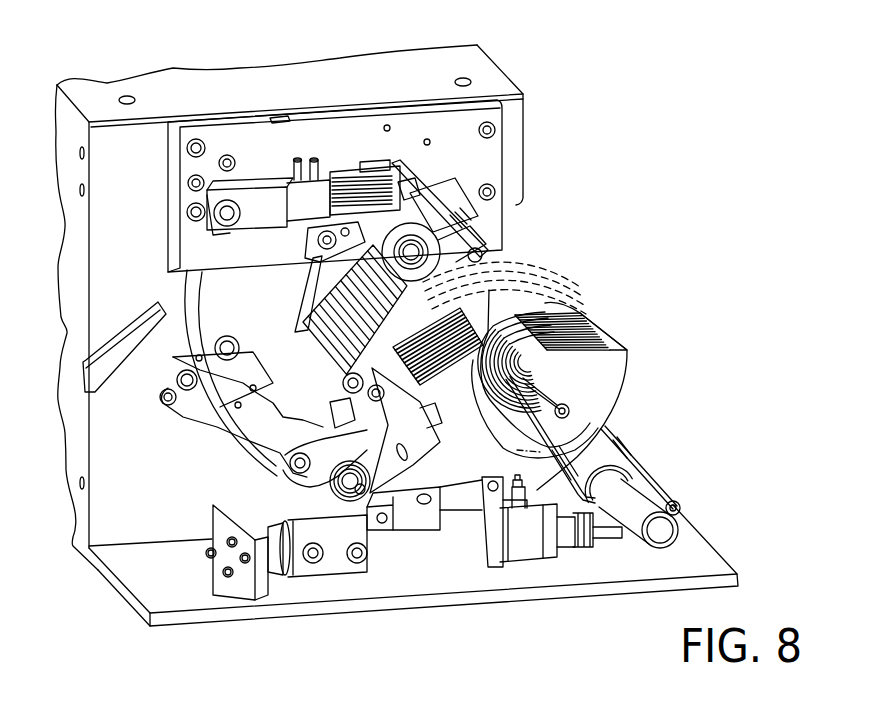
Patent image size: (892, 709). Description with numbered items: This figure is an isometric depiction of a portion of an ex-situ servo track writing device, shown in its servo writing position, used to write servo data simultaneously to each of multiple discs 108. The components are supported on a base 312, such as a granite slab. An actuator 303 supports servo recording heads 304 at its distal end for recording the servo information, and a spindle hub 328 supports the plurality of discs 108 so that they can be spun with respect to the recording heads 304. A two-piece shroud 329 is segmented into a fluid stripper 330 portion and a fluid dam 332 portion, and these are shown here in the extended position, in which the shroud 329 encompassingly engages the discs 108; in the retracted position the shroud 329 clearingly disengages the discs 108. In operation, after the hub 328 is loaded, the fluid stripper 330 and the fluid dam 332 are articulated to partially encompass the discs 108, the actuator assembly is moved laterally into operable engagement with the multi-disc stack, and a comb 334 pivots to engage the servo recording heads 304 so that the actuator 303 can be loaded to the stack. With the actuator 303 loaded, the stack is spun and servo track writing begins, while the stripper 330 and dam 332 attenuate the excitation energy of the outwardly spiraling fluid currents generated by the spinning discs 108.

The comb 334 is at (383, 213).
The servo recording heads 304 is at (440, 266).
The base 312 is at (303, 328).
The actuator 303 is at (275, 387).
The discs 108 is at (585, 302).
The spindle hub 328 is at (570, 377).
The fluid dam 332 is at (617, 402).
The two-piece shroud 329 is at (650, 431).
The fluid stripper 330 is at (463, 440).